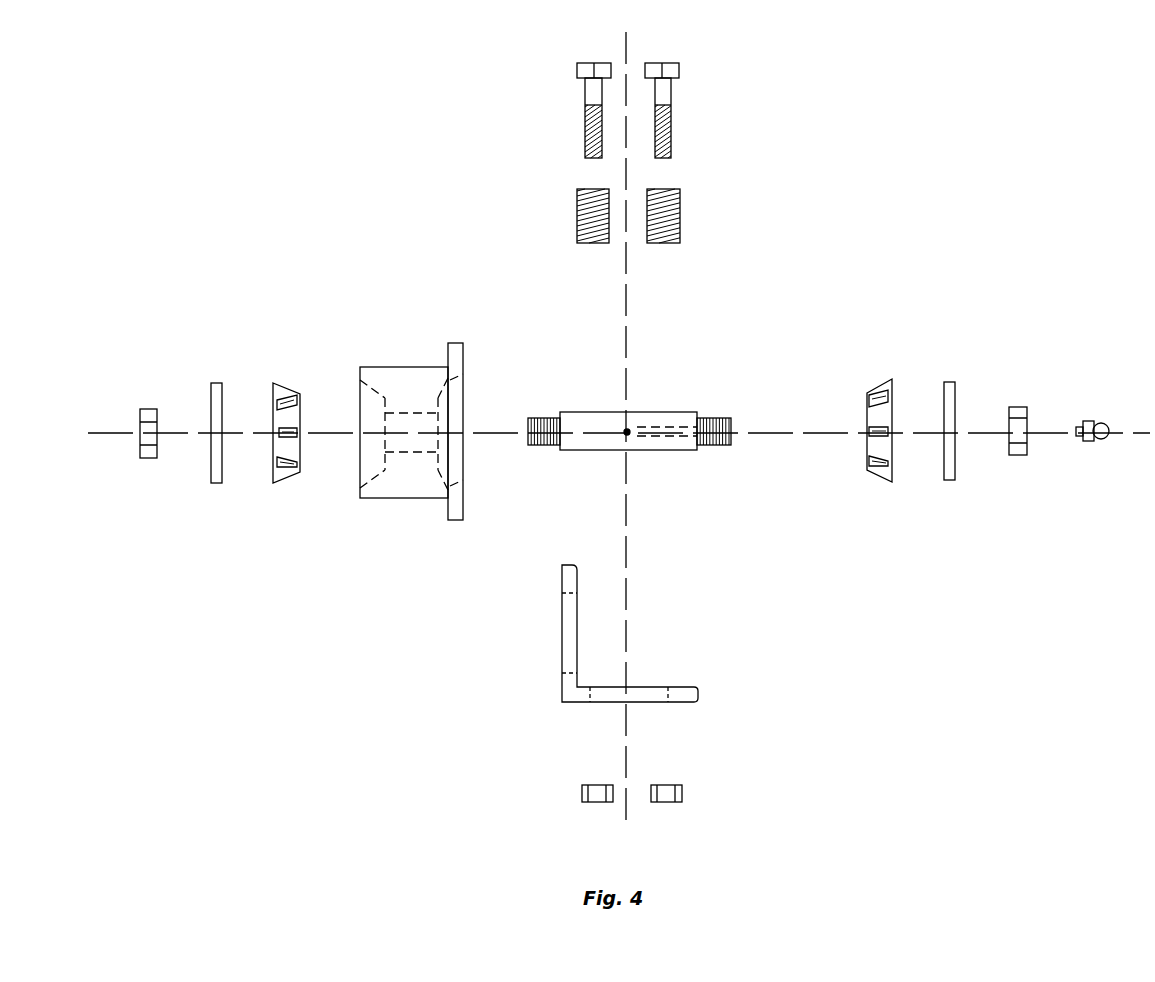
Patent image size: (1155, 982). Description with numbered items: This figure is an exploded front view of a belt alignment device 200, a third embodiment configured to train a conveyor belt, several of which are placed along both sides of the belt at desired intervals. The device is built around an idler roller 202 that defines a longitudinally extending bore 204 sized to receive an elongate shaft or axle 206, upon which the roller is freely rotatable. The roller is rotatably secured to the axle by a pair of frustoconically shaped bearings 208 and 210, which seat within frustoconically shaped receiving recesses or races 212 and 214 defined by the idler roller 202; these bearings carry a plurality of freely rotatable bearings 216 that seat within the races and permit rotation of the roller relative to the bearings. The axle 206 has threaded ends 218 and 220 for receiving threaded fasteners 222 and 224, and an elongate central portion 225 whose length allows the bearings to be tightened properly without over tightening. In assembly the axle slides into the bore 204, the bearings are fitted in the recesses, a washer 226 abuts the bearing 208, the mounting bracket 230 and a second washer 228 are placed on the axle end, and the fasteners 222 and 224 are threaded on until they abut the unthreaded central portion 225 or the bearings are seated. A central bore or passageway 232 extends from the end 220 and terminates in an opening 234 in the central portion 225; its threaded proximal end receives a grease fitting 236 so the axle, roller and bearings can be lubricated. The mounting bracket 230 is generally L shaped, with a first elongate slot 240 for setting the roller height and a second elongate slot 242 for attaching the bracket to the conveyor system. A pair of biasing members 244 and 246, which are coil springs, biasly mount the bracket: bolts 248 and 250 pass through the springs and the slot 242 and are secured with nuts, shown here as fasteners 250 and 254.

The belt alignment device 200 is at (838, 153).
The idler roller 202 is at (434, 436).
The longitudinally extending bore 204 is at (406, 455).
The elongate shaft or axle 206 is at (638, 438).
The frustoconically shaped bearing 208 is at (277, 483).
The frustoconically shaped bearing 210 is at (877, 482).
The receiving recess or race 212 is at (378, 482).
The receiving recess or race 214 is at (453, 468).
The freely rotatable bearings 216 is at (287, 428).
The threaded end 218 is at (548, 418).
The threaded end 220 is at (715, 450).
The threaded fastener 222 is at (147, 460).
The threaded fastener 224 is at (1019, 455).
The elongate central portion 225 is at (598, 452).
The washer 226 is at (217, 383).
The washer 228 is at (950, 382).
The mounting bracket 230 is at (594, 662).
The central bore or passageway 232 is at (668, 448).
The opening 234 is at (628, 430).
The grease fitting 236 is at (1098, 440).
The first elongate slot 240 is at (562, 613).
The second elongate slot 242 is at (652, 703).
The biasing member 244 is at (577, 215).
The biasing member 246 is at (680, 205).
The bolt 248 is at (585, 90).
The bolt 250 is at (671, 90).
The threaded fastener 254 is at (682, 793).